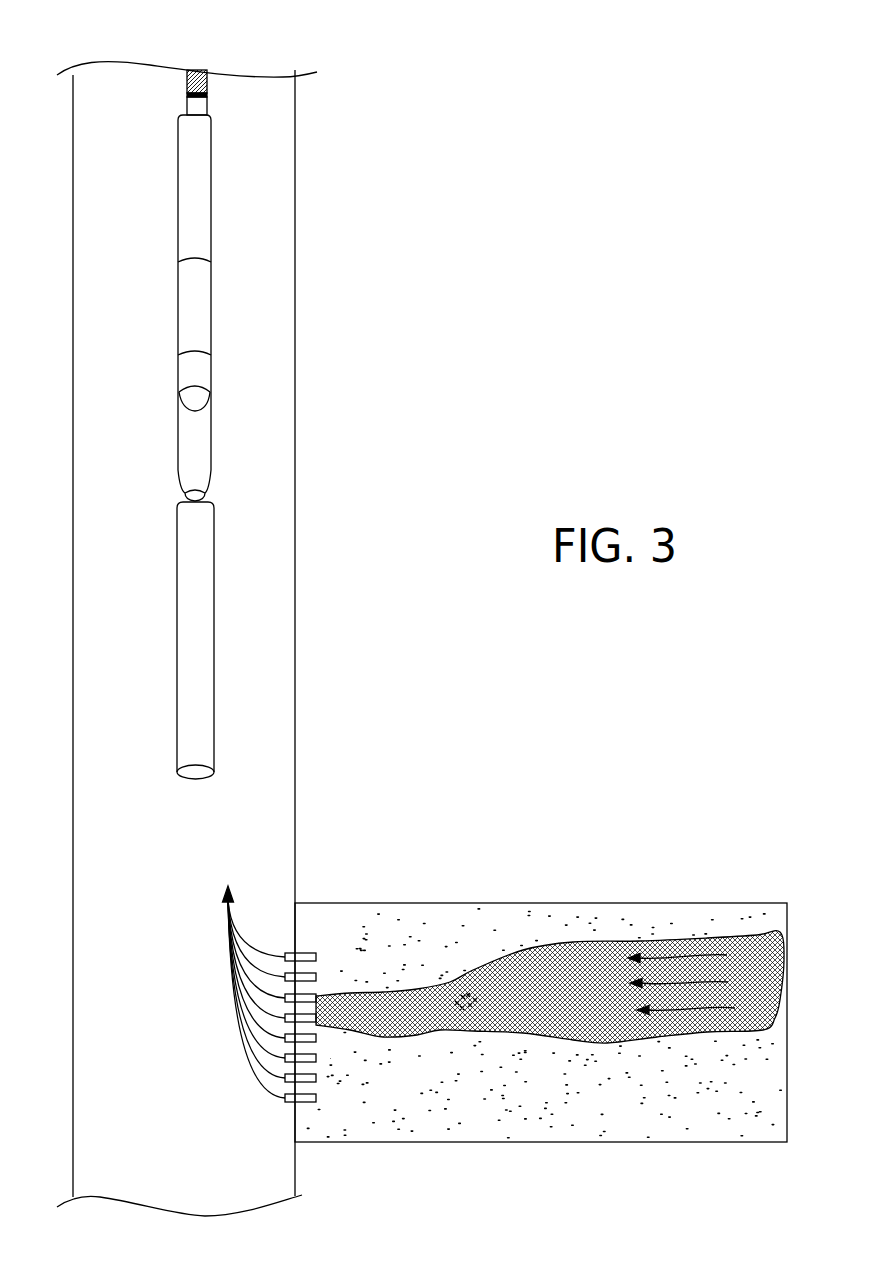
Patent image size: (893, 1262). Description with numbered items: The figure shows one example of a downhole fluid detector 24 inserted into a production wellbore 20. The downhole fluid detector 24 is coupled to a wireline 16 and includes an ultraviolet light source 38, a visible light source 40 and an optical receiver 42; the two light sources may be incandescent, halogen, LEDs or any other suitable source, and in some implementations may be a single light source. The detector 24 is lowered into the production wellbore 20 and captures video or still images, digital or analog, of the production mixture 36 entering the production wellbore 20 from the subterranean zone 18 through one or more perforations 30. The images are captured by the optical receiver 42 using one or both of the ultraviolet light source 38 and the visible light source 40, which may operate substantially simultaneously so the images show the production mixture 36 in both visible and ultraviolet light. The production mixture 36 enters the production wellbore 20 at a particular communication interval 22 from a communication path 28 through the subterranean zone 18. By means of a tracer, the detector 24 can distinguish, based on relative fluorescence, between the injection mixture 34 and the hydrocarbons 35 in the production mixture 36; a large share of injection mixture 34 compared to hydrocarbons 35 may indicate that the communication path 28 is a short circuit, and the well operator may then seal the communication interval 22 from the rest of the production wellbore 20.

The wireline 16 is at (207, 85).
The subterranean zone 18 is at (532, 897).
The production wellbore 20 is at (295, 350).
The communication interval 22 is at (335, 1063).
The downhole fluid detector 24 is at (217, 585).
The communication path 28 is at (613, 1033).
The perforations 30 is at (316, 977).
The injection mixture 34 is at (680, 950).
The hydrocarbons 35 is at (468, 1013).
The production mixture 36 is at (227, 940).
The ultraviolet light source 38 is at (198, 397).
The visible light source 40 is at (198, 400).
The optical receiver 42 is at (200, 708).